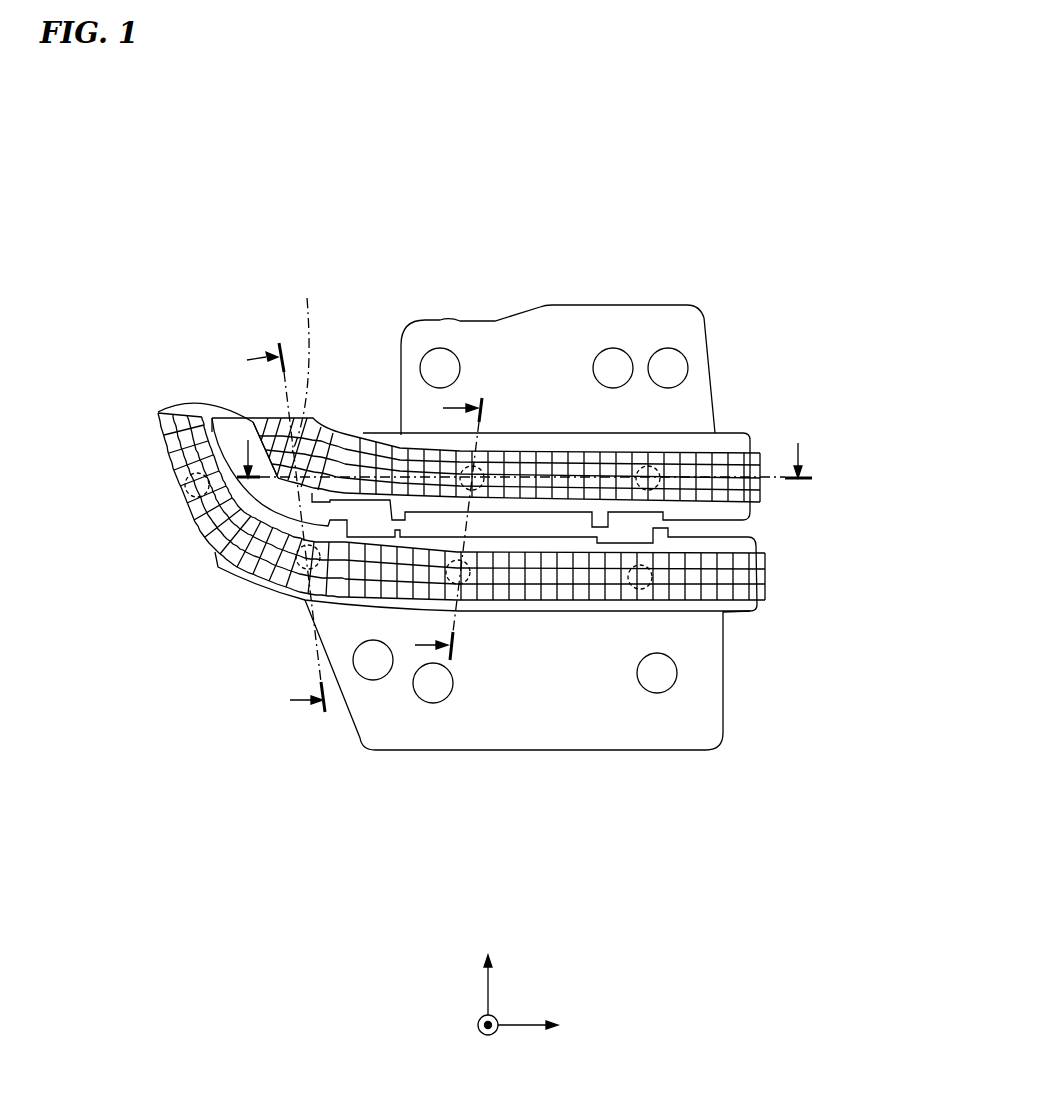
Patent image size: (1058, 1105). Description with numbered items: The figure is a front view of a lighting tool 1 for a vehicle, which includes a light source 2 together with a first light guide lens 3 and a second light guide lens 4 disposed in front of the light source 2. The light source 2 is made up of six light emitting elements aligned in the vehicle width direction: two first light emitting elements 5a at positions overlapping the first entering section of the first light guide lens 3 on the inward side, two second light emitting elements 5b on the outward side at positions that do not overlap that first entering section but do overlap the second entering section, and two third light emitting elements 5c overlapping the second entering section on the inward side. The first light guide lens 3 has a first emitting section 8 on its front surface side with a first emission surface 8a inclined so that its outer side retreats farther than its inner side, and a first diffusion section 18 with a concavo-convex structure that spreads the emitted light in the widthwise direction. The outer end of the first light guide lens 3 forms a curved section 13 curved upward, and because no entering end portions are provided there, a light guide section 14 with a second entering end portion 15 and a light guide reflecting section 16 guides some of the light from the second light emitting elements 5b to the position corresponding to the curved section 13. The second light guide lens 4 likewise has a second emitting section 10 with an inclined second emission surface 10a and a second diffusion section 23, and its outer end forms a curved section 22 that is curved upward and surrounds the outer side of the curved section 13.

The lighting tool for a vehicle 1 is at (242, 213).
The light source 2 is at (403, 550).
The first light guide lens 3 is at (748, 430).
The second light guide lens 4 is at (765, 615).
The first light emitting elements 5a is at (700, 281).
The second light emitting elements 5b is at (308, 570).
The third light emitting elements 5c is at (472, 583).
The first emitting section 8 is at (541, 369).
The first emission surface 8a is at (543, 462).
The second emitting section 10 is at (497, 645).
The second emission surface 10a is at (547, 577).
The curved section 13 is at (278, 481).
The light guide section 14 is at (227, 305).
The second entering end portion 15 is at (205, 417).
The light guide reflecting section 16 is at (222, 430).
The first diffusion section 18 is at (752, 462).
The curved section 22 is at (185, 522).
The second diffusion section 23 is at (757, 580).